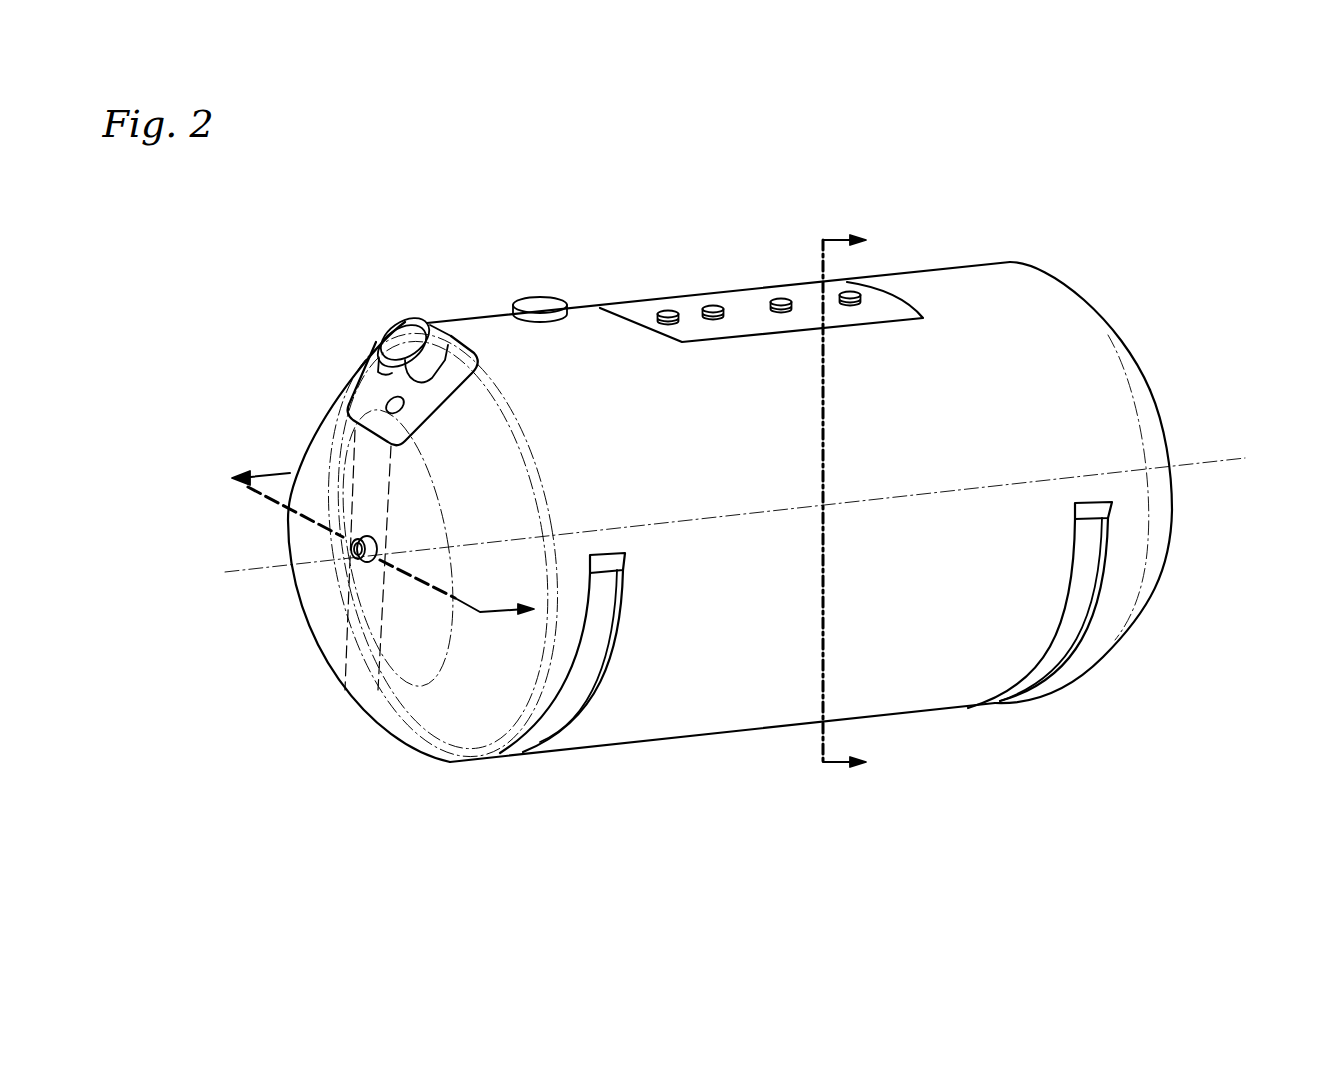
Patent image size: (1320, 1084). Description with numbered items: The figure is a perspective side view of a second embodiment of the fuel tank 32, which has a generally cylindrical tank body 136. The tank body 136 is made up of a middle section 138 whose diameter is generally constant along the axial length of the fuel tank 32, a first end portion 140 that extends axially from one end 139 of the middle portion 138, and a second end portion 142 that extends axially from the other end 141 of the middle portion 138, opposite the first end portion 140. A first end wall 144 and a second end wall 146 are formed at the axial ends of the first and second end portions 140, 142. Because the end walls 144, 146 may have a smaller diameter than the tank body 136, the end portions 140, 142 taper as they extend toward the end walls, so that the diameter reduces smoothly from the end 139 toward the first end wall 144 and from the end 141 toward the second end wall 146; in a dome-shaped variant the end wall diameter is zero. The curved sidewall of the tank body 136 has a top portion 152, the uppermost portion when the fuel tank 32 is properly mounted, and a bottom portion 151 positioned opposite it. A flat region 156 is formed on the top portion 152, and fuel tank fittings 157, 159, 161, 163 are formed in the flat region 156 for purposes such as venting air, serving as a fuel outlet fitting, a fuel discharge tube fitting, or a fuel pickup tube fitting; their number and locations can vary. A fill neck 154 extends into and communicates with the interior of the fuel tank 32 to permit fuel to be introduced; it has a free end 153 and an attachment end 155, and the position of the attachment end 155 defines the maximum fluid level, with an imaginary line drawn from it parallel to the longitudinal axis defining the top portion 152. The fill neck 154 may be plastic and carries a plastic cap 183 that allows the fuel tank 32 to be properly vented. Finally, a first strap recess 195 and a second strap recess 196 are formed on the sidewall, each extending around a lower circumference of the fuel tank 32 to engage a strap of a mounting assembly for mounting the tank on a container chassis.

The fuel tank 32 is at (1185, 178).
The tank body 136 is at (905, 738).
The middle section 138 is at (583, 327).
The one end of the middle portion 139 is at (448, 765).
The first end portion 140 is at (333, 395).
The another end of the middle portion 141 is at (1043, 267).
The second end portion 142 is at (1117, 342).
The first end wall 144 is at (328, 460).
The second end wall 146 is at (1163, 420).
The bottom portion of the sidewall 151 is at (710, 737).
The top portion of the sidewall 152 is at (963, 282).
The free end of the fill neck 153 is at (380, 372).
The fill neck 154 is at (445, 322).
The attachment end of the fill neck 155 is at (462, 355).
The flat region 156 is at (743, 303).
The fuel tank fitting 157 is at (668, 310).
The fuel tank fitting 159 is at (713, 303).
The fuel tank fitting 161 is at (781, 298).
The fuel tank fitting 163 is at (850, 290).
The plastic cap 183 is at (393, 333).
The first strap recess 195 is at (548, 735).
The second strap recess 196 is at (1047, 663).